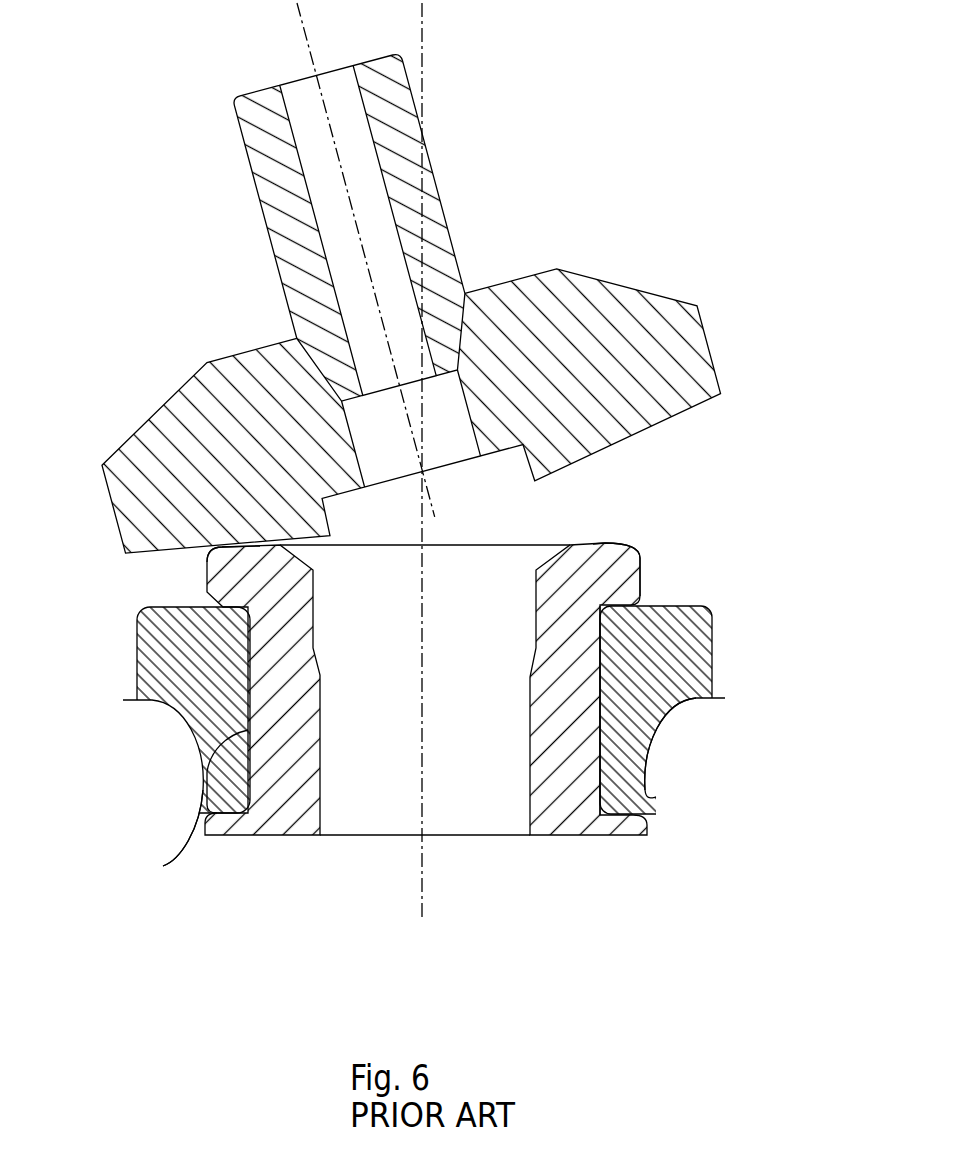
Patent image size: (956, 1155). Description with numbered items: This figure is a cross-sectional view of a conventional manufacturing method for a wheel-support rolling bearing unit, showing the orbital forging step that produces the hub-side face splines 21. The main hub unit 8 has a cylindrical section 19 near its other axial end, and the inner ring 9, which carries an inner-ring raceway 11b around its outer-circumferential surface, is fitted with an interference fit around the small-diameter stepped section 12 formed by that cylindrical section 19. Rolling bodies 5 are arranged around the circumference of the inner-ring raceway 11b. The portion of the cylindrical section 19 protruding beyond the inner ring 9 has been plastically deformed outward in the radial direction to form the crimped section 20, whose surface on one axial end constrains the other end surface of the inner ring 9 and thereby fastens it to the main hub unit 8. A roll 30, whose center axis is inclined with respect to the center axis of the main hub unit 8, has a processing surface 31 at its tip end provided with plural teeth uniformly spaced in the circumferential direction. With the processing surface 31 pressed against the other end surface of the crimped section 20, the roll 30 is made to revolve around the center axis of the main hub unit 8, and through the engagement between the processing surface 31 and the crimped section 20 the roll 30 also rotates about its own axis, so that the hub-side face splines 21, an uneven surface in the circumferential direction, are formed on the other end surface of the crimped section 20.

The roll 30 is at (460, 205).
The processing surface 31 is at (173, 553).
The crimped section 20 is at (620, 577).
The hub-side face splines 21 is at (596, 540).
The cylindrical section 19 is at (265, 670).
The inner ring 9 is at (687, 665).
The inner-ring raceway on the other side in the axial direction 11b is at (690, 722).
The rolling bodies 5 is at (160, 747).
The main hub unit 8 is at (612, 775).
The small-diameter stepped section 12 is at (189, 808).